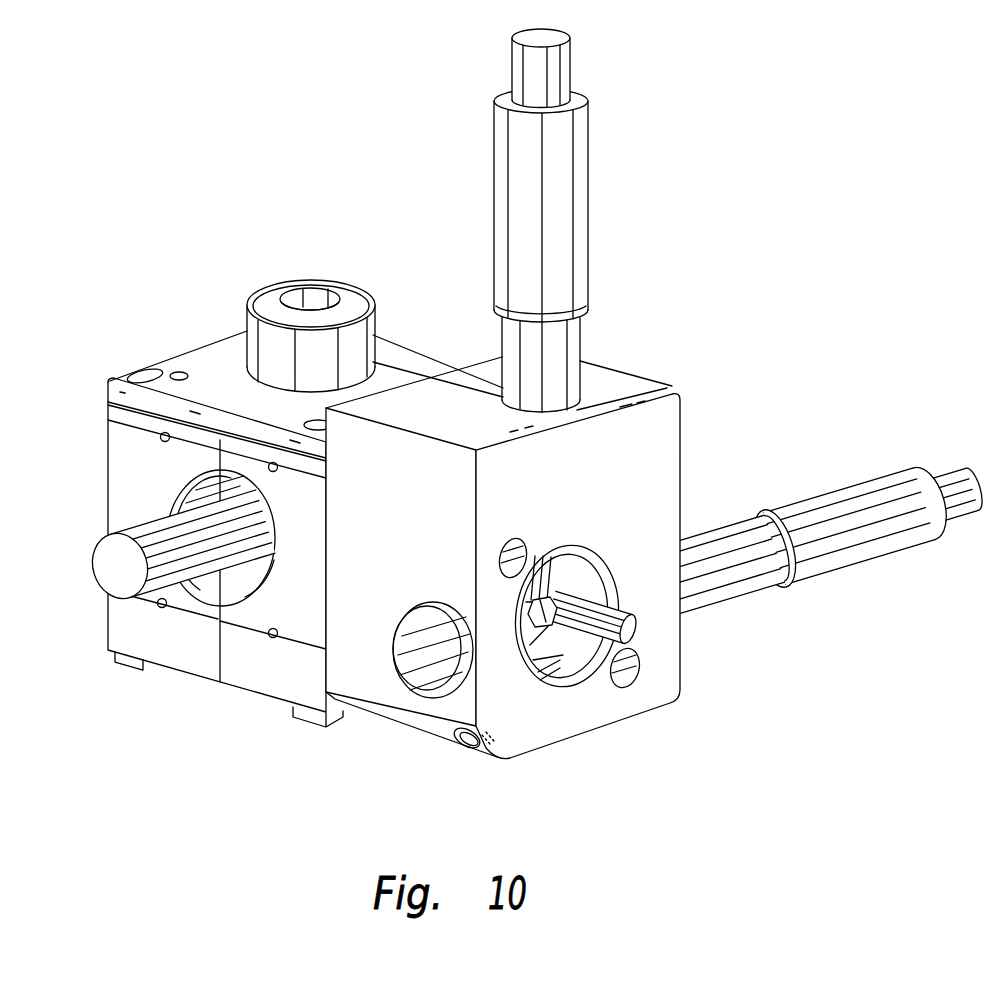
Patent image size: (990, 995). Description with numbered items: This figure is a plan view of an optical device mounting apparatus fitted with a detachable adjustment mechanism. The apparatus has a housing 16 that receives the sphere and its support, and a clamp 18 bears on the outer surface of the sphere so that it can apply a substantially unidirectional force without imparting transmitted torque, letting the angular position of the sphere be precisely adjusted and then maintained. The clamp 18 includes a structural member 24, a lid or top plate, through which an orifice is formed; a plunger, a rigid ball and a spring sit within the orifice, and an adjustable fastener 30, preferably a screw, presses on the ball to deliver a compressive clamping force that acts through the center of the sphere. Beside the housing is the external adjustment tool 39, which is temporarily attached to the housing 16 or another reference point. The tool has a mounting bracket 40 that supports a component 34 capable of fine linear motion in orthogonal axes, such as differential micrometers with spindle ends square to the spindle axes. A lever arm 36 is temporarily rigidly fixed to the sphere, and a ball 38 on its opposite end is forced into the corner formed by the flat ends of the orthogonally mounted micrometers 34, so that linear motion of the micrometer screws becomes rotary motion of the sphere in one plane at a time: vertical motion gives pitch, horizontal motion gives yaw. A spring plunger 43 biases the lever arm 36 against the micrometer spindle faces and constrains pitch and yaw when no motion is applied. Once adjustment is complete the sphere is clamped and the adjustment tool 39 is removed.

The housing 16 is at (118, 483).
The clamp 18 is at (205, 360).
The structural member 24 is at (117, 390).
The adjustable fastener 30 is at (337, 282).
The micrometer 34 is at (588, 173).
The lever arm 36 is at (628, 627).
The ball 38 is at (563, 661).
The external adjustment tool 39 is at (693, 657).
The mounting bracket 40 is at (633, 383).
The spring plunger 43 is at (548, 627).